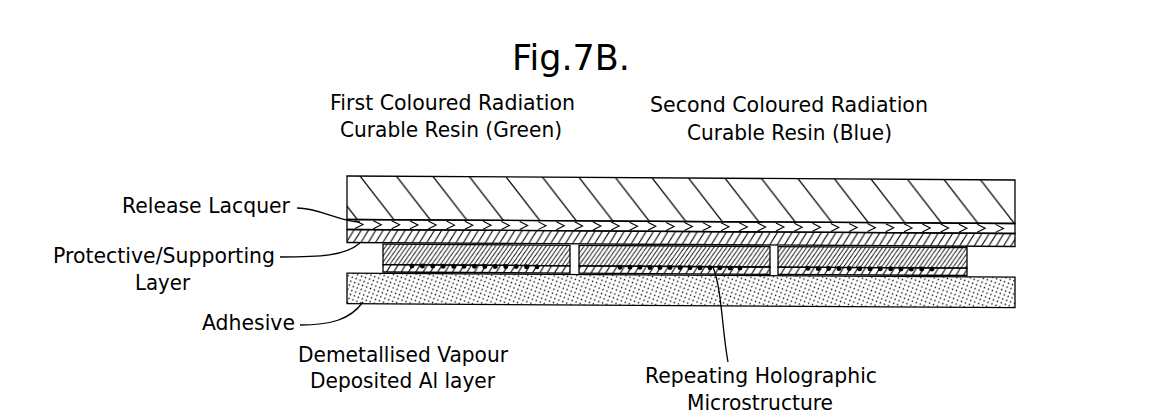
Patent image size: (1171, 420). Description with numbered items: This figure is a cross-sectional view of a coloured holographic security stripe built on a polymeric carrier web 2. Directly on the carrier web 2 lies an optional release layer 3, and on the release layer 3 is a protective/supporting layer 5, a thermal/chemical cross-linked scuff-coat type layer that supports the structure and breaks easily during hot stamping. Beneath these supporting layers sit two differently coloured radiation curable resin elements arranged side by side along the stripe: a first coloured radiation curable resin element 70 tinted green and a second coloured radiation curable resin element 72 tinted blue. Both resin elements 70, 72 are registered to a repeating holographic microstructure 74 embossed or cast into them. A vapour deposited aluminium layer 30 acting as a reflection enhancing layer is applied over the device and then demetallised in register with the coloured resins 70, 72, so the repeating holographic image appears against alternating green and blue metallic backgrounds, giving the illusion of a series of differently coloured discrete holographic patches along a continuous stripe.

The polymeric carrier web 2 is at (992, 197).
The release layer 3 is at (1008, 228).
The protective/supporting layer 5 is at (1013, 240).
The first coloured radiation curable resin element 70 is at (477, 247).
The second coloured radiation curable resin element 72 is at (755, 245).
The vapour deposited aluminium layer 30 is at (403, 268).
The repeating holographic microstructure 74 is at (512, 267).